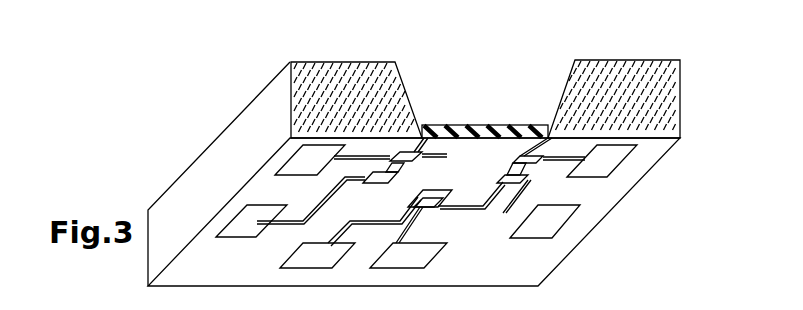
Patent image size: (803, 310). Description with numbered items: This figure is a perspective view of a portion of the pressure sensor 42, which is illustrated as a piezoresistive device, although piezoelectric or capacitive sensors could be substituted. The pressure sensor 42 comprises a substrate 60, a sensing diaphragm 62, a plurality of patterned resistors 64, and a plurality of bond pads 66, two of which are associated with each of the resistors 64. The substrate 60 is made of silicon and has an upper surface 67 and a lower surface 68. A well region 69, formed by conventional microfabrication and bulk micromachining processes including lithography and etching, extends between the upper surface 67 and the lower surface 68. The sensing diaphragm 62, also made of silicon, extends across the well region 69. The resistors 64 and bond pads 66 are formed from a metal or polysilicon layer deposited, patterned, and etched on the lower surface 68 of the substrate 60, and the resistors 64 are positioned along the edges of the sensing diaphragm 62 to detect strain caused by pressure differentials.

The pressure sensor 42 is at (223, 128).
The substrate 60 is at (667, 93).
The sensing diaphragm 62 is at (488, 126).
The patterned resistors 64 is at (520, 160).
The bond pads 66 is at (303, 167).
The upper surface 67 is at (362, 62).
The lower surface 68 is at (233, 262).
The well region 69 is at (458, 98).